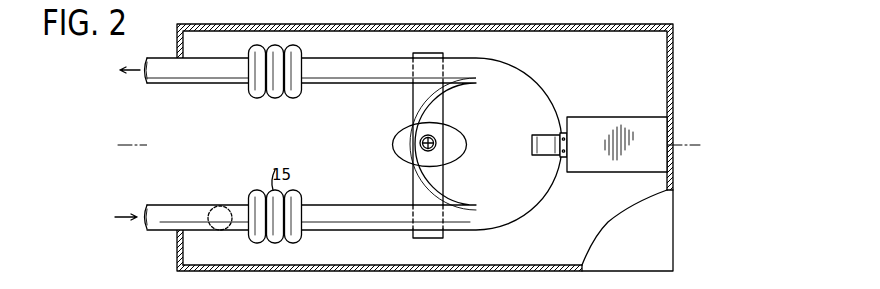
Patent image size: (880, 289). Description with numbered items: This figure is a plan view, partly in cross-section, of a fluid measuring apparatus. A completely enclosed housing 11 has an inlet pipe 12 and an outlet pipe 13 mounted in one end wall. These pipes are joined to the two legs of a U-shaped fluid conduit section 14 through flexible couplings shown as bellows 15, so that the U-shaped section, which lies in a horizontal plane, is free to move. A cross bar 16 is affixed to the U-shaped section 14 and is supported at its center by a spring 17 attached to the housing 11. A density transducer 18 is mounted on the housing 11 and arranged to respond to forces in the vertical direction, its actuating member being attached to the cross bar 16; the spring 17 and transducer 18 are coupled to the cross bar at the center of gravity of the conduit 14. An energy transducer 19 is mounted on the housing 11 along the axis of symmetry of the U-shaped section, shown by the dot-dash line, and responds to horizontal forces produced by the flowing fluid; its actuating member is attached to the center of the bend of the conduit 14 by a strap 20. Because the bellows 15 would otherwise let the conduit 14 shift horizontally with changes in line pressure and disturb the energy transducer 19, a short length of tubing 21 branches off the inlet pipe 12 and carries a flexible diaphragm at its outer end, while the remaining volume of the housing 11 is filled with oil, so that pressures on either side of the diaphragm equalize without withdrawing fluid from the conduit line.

The housing 11 is at (675, 58).
The inlet pipe 12 is at (160, 207).
The outlet pipe 13 is at (160, 80).
The U-shaped fluid conduit section 14 is at (525, 82).
The bellows 15 is at (278, 90).
The cross bar 16 is at (443, 100).
The spring 17 is at (432, 150).
The density transducer 18 is at (400, 137).
The energy transducer 19 is at (597, 120).
The strap 20 is at (548, 152).
The short length of tubing 21 is at (210, 208).